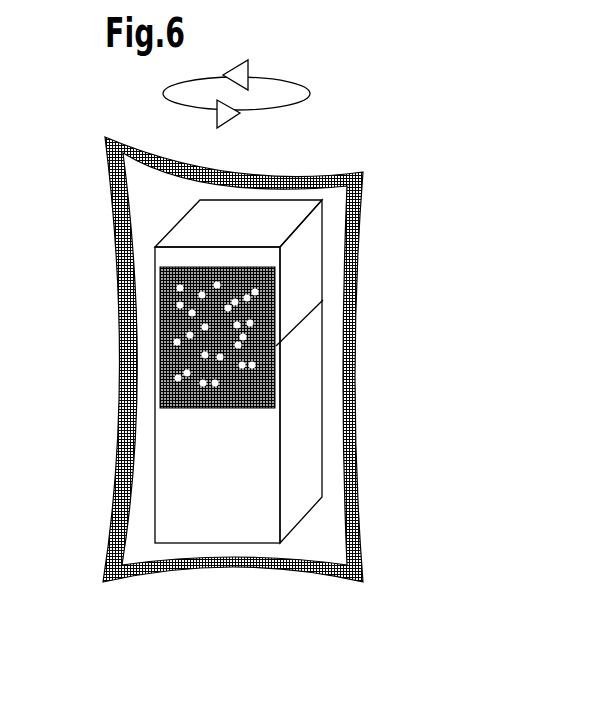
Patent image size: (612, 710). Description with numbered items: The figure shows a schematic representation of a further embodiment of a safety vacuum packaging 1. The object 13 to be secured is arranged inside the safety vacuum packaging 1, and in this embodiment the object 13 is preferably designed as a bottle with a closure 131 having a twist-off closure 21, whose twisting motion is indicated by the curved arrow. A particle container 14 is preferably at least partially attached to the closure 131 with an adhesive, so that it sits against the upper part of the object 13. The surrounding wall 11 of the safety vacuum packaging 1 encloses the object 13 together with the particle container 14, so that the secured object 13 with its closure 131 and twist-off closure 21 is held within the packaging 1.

The safety vacuum packaging 1 is at (398, 160).
The tube / container wall 11 is at (352, 362).
The object to be secured 13 is at (245, 418).
The closure 131 is at (300, 272).
The particle container 14 is at (160, 403).
The twist-off closure 21 is at (265, 94).